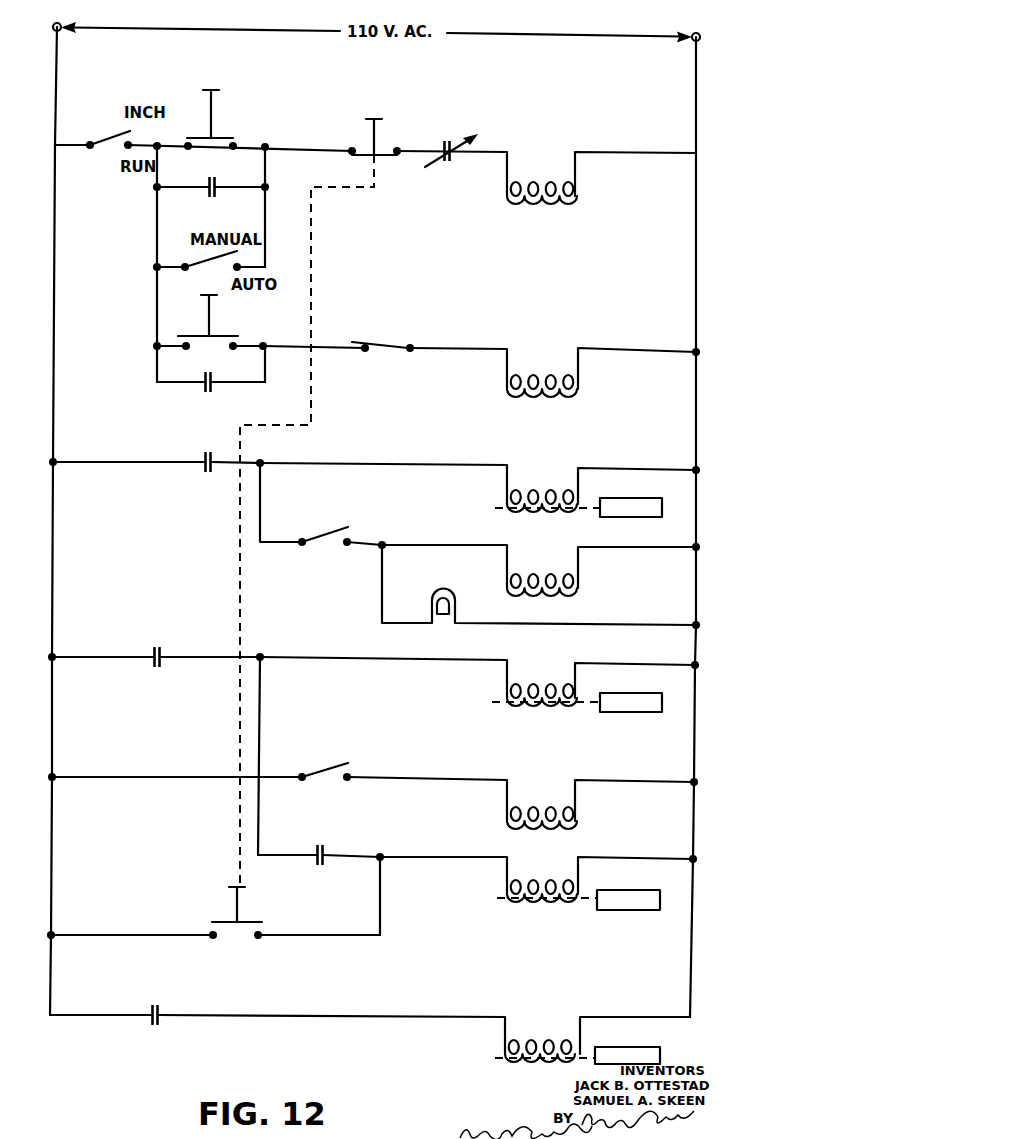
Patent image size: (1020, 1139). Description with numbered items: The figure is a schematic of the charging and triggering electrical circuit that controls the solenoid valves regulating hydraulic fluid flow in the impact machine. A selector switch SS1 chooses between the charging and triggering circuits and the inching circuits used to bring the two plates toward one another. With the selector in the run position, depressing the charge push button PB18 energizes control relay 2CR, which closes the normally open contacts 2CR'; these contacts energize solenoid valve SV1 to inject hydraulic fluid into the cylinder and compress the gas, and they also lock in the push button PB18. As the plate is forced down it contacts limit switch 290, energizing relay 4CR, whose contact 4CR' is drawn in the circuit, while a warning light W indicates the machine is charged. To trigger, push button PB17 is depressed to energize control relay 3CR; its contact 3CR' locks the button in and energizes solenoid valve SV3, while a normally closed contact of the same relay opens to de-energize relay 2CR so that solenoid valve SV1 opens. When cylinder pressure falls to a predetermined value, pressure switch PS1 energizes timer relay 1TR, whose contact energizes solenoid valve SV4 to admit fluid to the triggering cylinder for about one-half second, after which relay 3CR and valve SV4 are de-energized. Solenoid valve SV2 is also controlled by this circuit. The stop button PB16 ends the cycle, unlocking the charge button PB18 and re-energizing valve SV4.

The selector switch SS1 is at (113, 128).
The push button PB18 is at (214, 93).
The stop button PB16 is at (376, 134).
The push button PB17 is at (214, 299).
The normally open contacts 2CR' is at (159, 331).
The contact 3CR' is at (156, 532).
The relay 4CR contact 4CR' is at (180, 1027).
The timer relay 1TR is at (374, 344).
The control relay 2CR is at (546, 206).
The control relay 3CR is at (550, 398).
The relay 4CR is at (565, 589).
The limit switch 290 is at (325, 532).
The pressure switch PS1 is at (338, 766).
The warning light W is at (450, 594).
The solenoid valve SV1 is at (638, 498).
The solenoid valve SV2 is at (640, 1045).
The solenoid valve SV3 is at (640, 691).
The solenoid valve SV4 is at (640, 888).